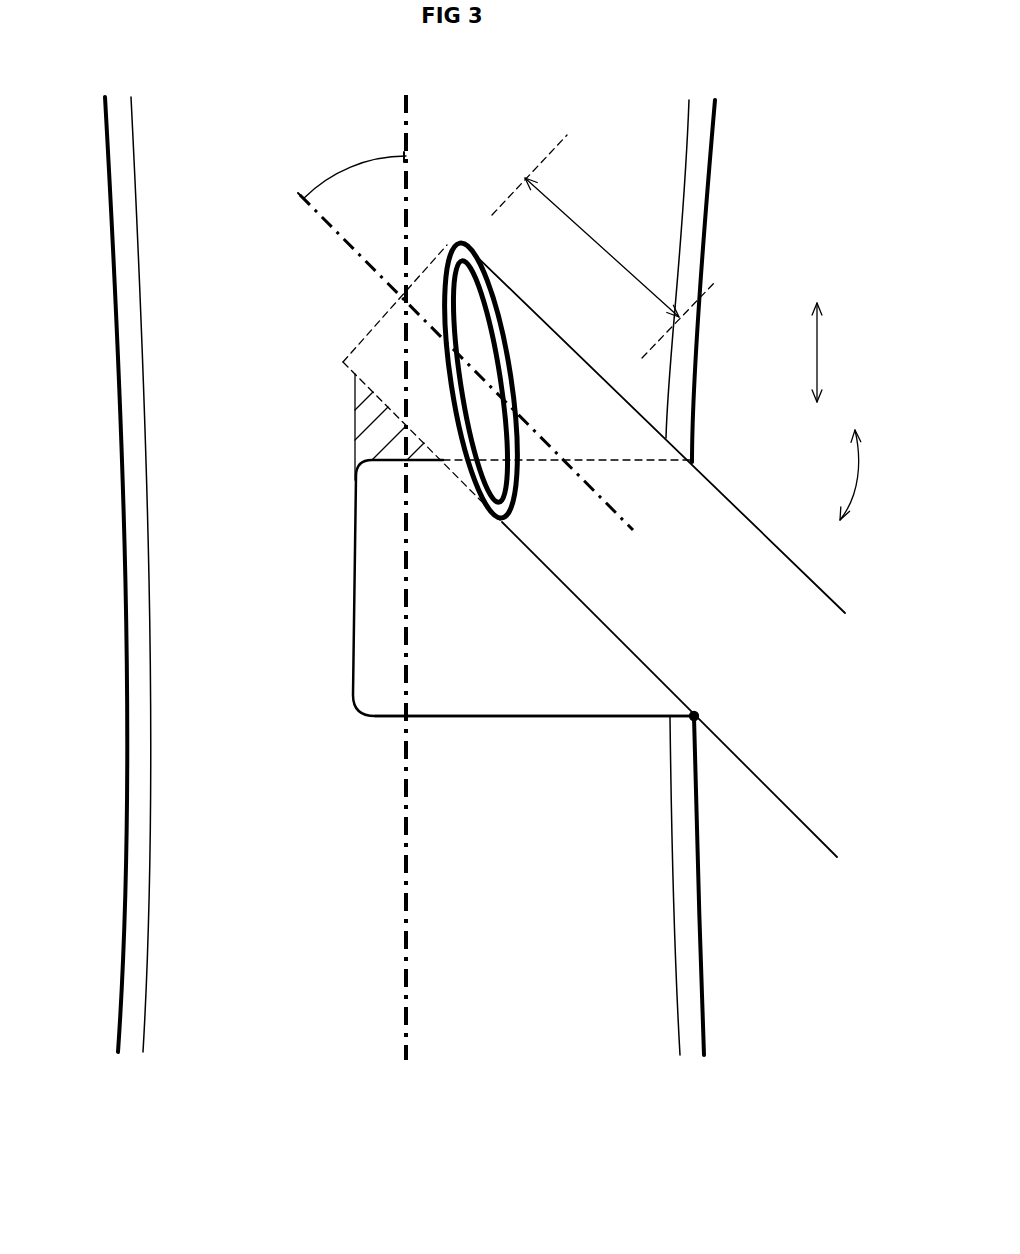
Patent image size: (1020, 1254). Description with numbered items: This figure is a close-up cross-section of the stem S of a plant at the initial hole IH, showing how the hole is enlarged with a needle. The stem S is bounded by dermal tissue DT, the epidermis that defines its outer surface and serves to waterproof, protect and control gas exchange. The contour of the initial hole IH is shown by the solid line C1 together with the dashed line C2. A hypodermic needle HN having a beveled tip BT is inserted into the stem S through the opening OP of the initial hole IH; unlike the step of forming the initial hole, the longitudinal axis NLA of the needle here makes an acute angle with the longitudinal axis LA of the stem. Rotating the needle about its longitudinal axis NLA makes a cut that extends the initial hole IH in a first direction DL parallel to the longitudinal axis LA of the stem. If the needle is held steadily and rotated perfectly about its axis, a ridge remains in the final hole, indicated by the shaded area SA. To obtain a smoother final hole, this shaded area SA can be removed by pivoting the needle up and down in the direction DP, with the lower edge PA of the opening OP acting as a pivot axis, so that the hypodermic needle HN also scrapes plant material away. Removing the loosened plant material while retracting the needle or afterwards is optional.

The longitudinal axis of the stem LA is at (408, 103).
The longitudinal axis of the needle NLA is at (312, 212).
The beveled tip BT is at (603, 246).
The dermal tissue DT is at (128, 411).
The first direction DL is at (818, 360).
The pivoting direction DP is at (853, 482).
The hypodermic needle HN is at (780, 567).
The dashed line C2 is at (640, 462).
The solid line C1 is at (512, 718).
The shaded area SA is at (378, 440).
The initial hole IH is at (380, 617).
The stem S is at (105, 603).
The lower edge of the opening PA is at (686, 720).
The opening OP is at (695, 607).